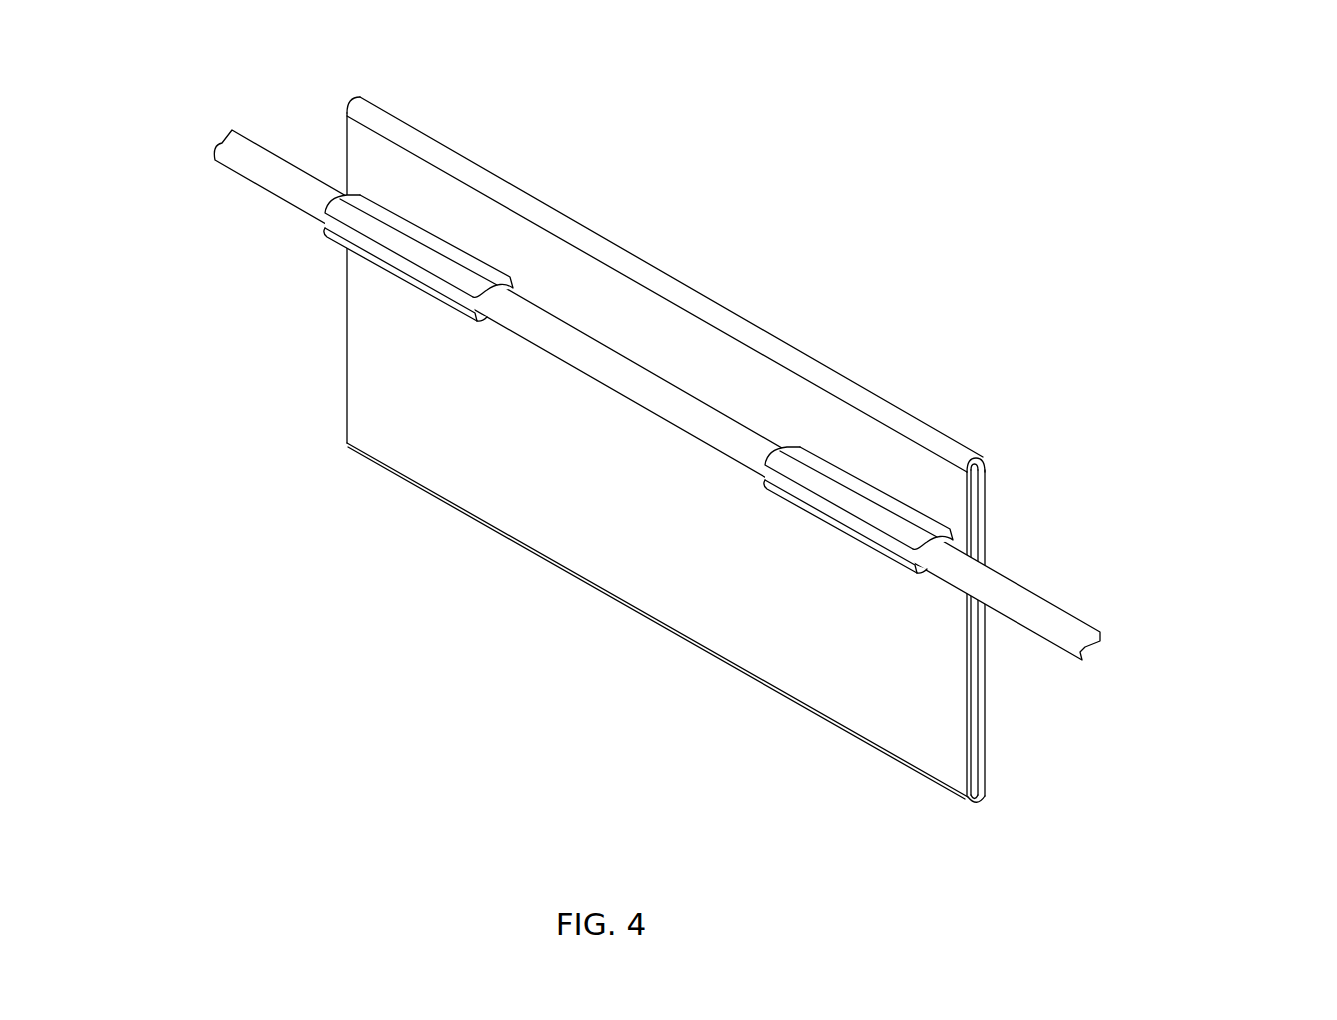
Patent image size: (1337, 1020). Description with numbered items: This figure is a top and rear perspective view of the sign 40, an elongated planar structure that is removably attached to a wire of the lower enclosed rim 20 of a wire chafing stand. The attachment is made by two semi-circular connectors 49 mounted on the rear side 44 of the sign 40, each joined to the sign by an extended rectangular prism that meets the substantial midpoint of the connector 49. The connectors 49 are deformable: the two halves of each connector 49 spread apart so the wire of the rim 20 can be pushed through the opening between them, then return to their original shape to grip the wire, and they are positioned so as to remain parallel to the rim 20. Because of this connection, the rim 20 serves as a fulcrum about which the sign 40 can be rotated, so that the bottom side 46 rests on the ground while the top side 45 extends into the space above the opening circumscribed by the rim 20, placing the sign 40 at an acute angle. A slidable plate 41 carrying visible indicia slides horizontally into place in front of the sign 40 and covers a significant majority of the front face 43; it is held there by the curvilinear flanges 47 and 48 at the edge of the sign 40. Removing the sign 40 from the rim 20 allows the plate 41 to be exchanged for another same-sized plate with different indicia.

The lower enclosed rim 20 is at (272, 168).
The sign 40 is at (720, 434).
The slidable plate 41 is at (977, 538).
The front face of the sign 43 is at (985, 650).
The rear side 44 is at (420, 377).
The top side 45 is at (465, 160).
The bottom side 46 is at (515, 543).
The curvilinear flange 47 is at (985, 460).
The curvilinear flange 48 is at (990, 785).
The semi-circular connector 49 is at (458, 270).